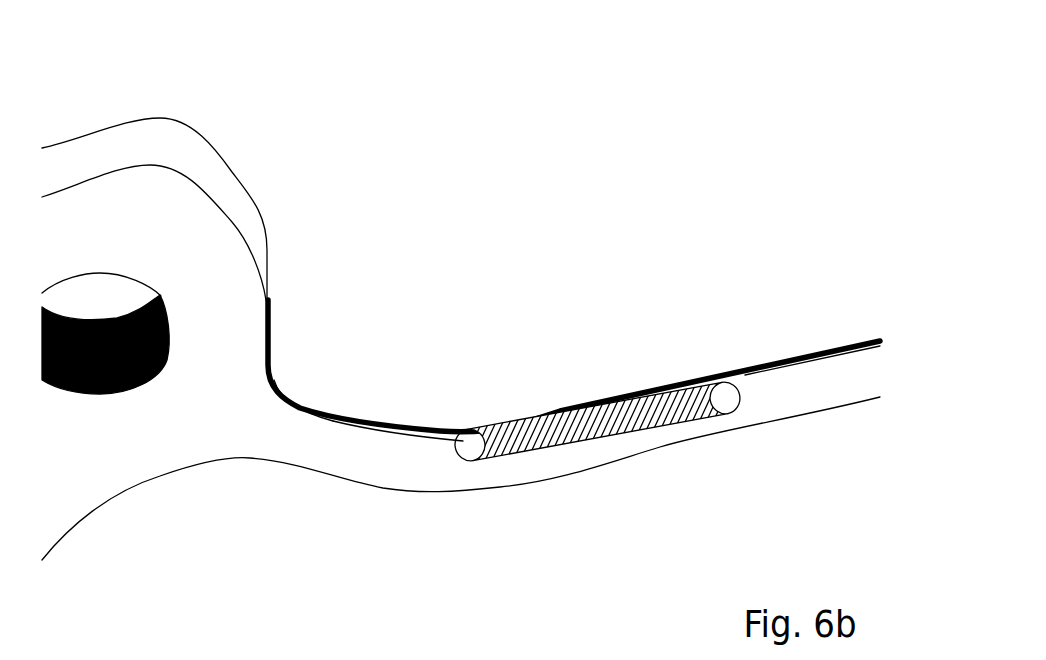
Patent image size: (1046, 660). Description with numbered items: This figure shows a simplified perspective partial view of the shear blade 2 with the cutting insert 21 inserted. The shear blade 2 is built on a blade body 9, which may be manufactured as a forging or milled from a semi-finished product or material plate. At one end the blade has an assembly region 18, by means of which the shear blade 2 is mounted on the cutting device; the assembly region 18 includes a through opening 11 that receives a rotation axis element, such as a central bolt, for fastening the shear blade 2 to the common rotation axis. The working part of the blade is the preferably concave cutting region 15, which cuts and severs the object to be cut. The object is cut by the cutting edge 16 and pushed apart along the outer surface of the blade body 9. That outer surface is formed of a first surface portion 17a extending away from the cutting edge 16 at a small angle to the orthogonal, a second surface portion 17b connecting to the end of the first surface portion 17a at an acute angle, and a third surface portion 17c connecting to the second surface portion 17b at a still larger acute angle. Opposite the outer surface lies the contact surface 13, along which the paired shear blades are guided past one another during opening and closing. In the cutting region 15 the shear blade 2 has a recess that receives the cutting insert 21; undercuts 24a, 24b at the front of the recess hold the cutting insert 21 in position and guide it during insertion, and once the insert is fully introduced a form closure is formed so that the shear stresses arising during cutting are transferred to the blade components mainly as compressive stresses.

The shear blade 2 is at (467, 60).
The blade body 9 is at (252, 340).
The through opening 11 is at (104, 293).
The contact surface 13 is at (513, 508).
The cutting region 15 is at (836, 190).
The cutting edge 16 is at (615, 384).
The first surface portion 17a is at (317, 410).
The second surface portion 17b is at (393, 427).
The third surface portion 17c is at (787, 380).
The assembly region 18 is at (266, 156).
The cutting insert 21 is at (575, 423).
The undercut 24a is at (470, 462).
The second end of conductive element 24b is at (738, 398).